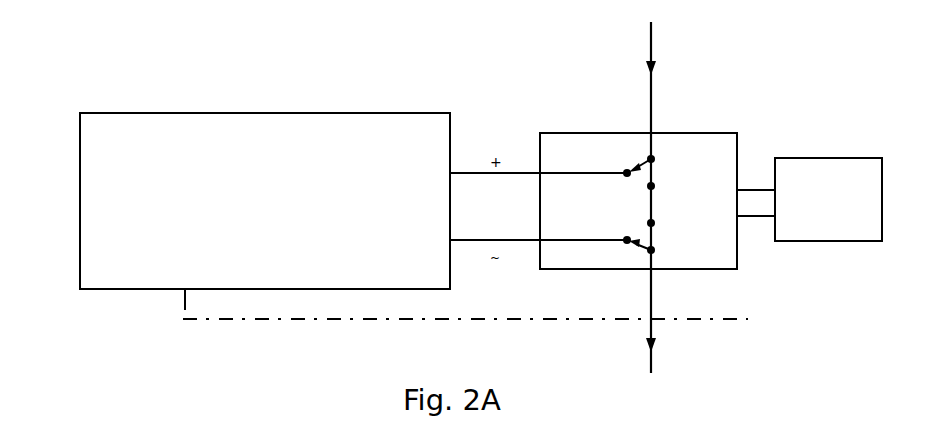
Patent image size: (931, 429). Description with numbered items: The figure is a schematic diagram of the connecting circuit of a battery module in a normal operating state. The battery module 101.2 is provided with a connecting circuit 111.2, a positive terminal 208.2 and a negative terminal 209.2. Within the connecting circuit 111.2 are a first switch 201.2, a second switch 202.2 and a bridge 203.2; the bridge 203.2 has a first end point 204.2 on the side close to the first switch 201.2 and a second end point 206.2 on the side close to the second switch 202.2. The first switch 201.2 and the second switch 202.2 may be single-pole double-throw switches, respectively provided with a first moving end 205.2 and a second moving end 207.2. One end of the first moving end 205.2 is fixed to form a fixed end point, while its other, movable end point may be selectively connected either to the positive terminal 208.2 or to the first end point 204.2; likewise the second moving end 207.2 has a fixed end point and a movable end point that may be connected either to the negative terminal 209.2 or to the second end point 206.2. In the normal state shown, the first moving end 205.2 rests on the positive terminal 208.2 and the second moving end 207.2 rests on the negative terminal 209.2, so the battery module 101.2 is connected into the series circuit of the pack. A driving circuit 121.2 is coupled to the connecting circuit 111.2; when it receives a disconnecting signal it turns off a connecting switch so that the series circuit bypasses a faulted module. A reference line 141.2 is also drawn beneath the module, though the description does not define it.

The battery module 101.2 is at (80, 205).
The connecting circuit 111.2 is at (560, 143).
The driving circuit 121.2 is at (818, 157).
The ground / reference line 141.2 is at (527, 320).
The first switch 201.2 is at (652, 155).
The second switch 202.2 is at (652, 254).
The bridge 203.2 is at (652, 201).
The first end point 204.2 is at (655, 185).
The first moving end 205.2 is at (636, 165).
The second end point 206.2 is at (655, 223).
The second moving end 207.2 is at (638, 253).
The positive terminal 208.2 is at (627, 169).
The negative terminal 209.2 is at (627, 236).